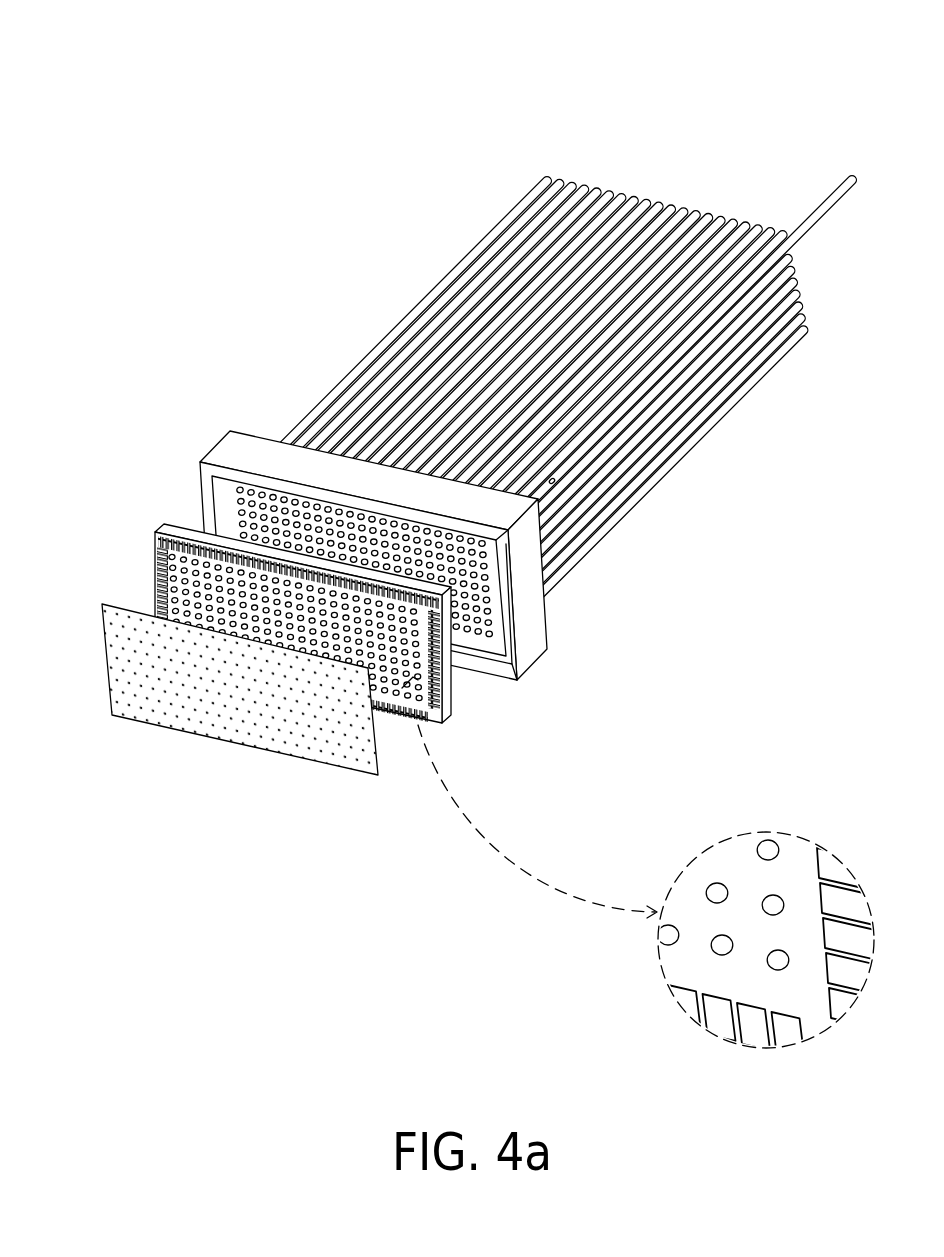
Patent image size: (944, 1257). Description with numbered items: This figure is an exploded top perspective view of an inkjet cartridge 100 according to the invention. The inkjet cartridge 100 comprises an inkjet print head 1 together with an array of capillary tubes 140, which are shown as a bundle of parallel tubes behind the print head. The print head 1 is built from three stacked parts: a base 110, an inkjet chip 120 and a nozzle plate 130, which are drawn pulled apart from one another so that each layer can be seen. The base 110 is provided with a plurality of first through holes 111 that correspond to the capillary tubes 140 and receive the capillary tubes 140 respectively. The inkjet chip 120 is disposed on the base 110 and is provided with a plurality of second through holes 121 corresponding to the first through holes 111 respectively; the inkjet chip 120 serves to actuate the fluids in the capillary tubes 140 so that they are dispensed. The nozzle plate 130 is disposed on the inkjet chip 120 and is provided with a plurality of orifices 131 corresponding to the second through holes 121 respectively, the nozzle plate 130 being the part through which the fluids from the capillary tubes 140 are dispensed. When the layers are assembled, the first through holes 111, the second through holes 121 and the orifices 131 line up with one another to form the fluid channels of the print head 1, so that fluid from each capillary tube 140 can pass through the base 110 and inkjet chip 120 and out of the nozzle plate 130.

The inkjet cartridge 100 is at (165, 49).
The capillary tubes 140 is at (521, 206).
The inkjet print head 1 is at (203, 342).
The base 110 is at (220, 455).
The first through holes 111 is at (487, 603).
The inkjet chip 120 is at (152, 530).
The second through holes 121 is at (765, 848).
The nozzle plate 130 is at (102, 604).
The orifices 131 is at (367, 762).